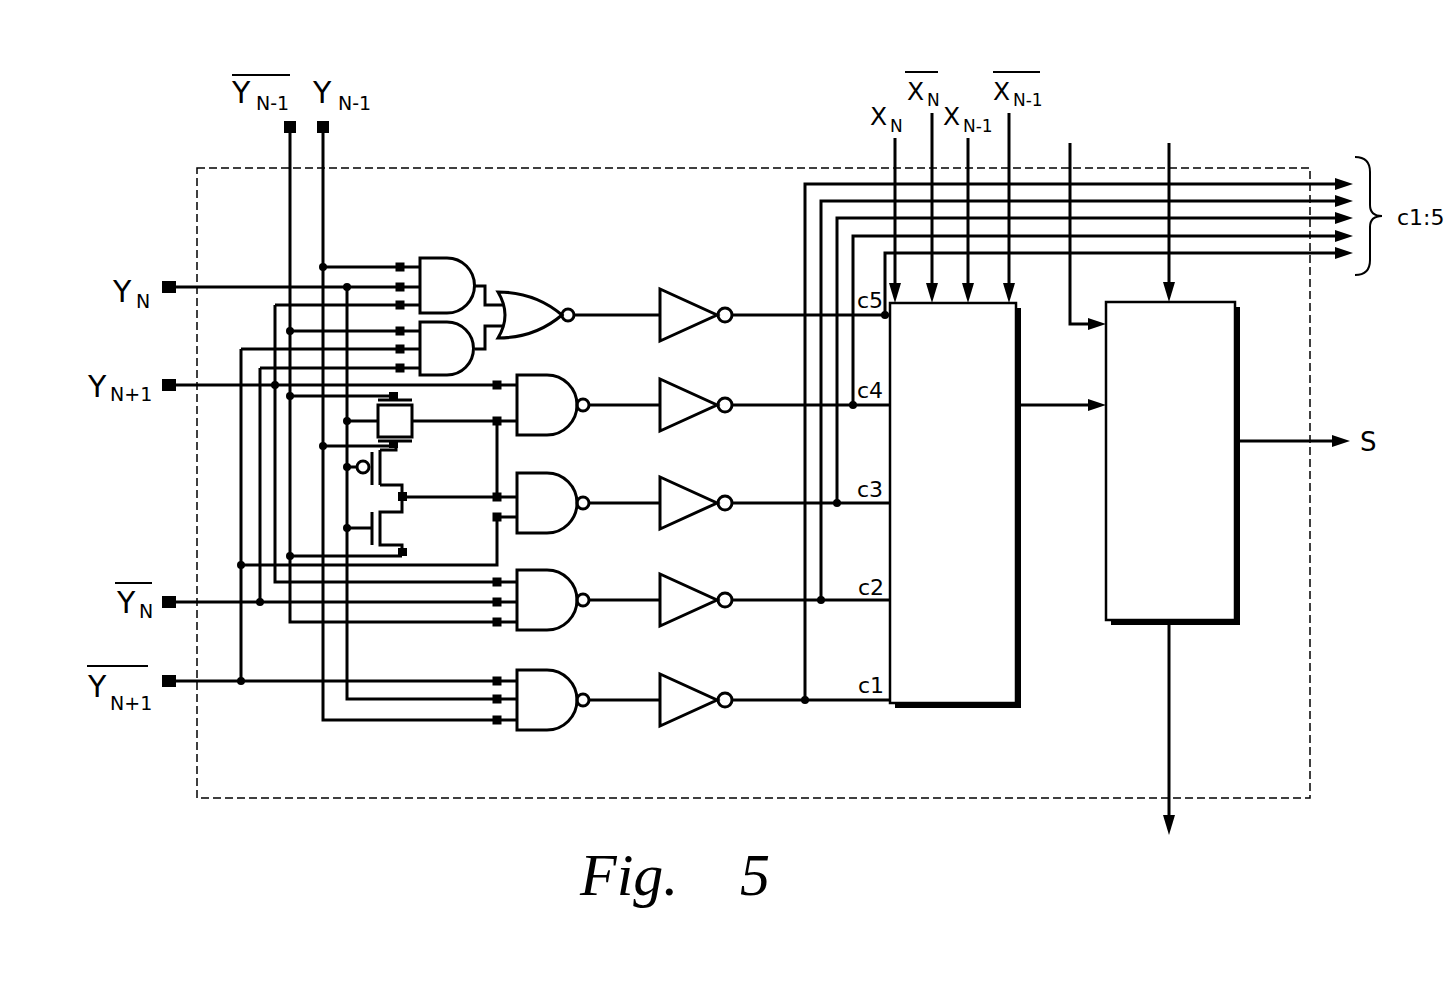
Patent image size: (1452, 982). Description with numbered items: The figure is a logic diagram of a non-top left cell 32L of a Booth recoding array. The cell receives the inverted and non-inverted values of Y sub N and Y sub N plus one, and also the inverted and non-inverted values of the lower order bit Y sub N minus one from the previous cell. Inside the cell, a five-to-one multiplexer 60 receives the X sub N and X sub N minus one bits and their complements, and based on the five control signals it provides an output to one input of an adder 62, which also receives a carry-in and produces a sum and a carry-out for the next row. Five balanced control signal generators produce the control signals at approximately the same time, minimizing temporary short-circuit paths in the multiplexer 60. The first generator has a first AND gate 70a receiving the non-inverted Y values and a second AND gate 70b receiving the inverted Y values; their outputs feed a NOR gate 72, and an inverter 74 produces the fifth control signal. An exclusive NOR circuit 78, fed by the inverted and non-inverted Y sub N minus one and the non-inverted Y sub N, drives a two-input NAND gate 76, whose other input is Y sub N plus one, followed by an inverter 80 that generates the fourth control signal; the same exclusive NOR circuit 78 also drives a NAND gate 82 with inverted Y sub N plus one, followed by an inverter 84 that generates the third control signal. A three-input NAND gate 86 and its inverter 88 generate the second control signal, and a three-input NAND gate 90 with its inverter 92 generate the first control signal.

The non-top left cell 32L is at (665, 167).
The 5-to-1 multiplexer 60 is at (1022, 580).
The adder 62 is at (1240, 520).
The first AND gate 70a is at (440, 257).
The second AND gate 70b is at (483, 362).
The NOR gate 72 is at (548, 292).
The inverter 74 is at (680, 292).
The NAND gate 76 is at (566, 380).
The exclusive NOR circuit 78 is at (320, 472).
The inverter 80 is at (682, 383).
The NAND gate 82 is at (568, 476).
The inverter 84 is at (682, 481).
The NAND gate 86 is at (567, 573).
The inverter 88 is at (684, 579).
The NAND gate 90 is at (567, 672).
The inverter 92 is at (686, 678).